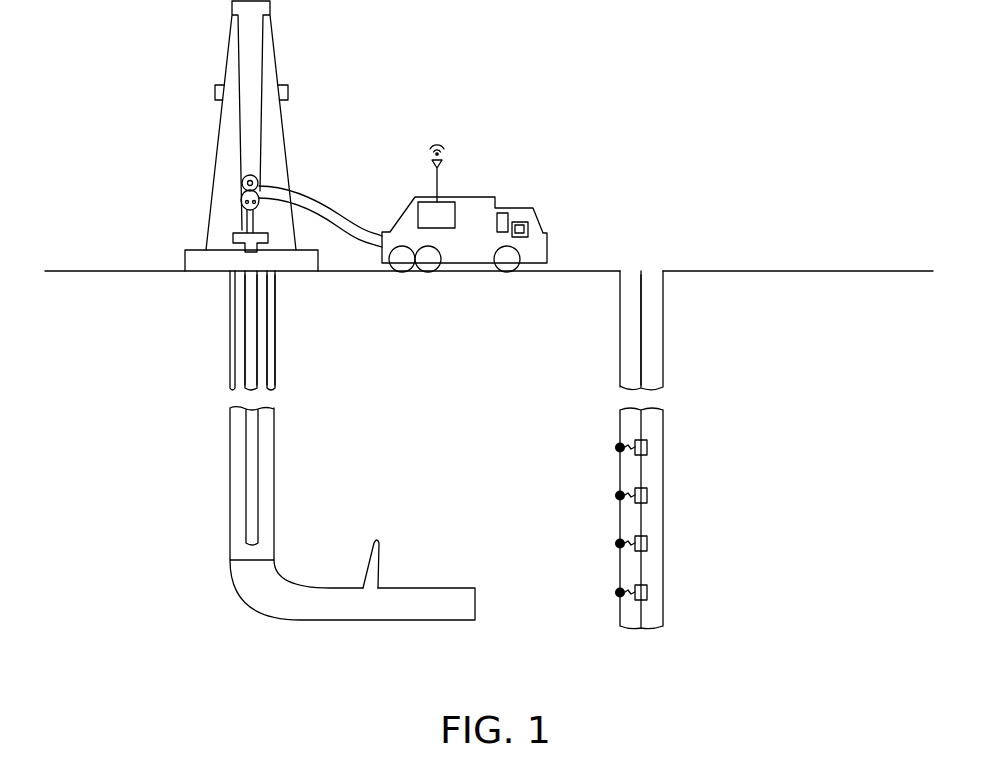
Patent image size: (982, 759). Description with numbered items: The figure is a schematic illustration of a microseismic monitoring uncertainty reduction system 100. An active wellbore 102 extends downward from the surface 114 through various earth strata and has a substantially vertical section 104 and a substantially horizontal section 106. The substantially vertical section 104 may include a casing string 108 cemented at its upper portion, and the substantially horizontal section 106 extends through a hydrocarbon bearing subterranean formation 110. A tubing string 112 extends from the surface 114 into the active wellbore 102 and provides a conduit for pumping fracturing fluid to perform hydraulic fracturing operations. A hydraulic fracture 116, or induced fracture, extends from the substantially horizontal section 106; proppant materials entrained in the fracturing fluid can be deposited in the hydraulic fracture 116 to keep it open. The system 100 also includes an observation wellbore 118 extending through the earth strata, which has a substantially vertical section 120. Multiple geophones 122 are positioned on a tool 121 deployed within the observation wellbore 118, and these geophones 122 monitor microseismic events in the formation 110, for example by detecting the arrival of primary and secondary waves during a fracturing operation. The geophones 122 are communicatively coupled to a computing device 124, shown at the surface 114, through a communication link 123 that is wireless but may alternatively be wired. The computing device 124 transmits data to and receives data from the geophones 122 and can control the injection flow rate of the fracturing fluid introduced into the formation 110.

The microseismic monitoring uncertainty reduction system 100 is at (703, 95).
The active wellbore 102 is at (227, 341).
The substantially vertical section 104 is at (228, 470).
The substantially horizontal section 106 is at (450, 587).
The casing string 108 is at (273, 299).
The hydrocarbon bearing subterranean formation 110 is at (314, 509).
The tubing string 112 is at (252, 350).
The surface 114 is at (85, 270).
The hydraulic fracture 116 is at (368, 553).
The observation wellbore 118 is at (665, 318).
The substantially vertical section 120 is at (665, 436).
The tool 121 is at (642, 357).
The geophones 122 is at (647, 449).
The communication link 123 is at (440, 140).
The computing device 124 is at (452, 198).